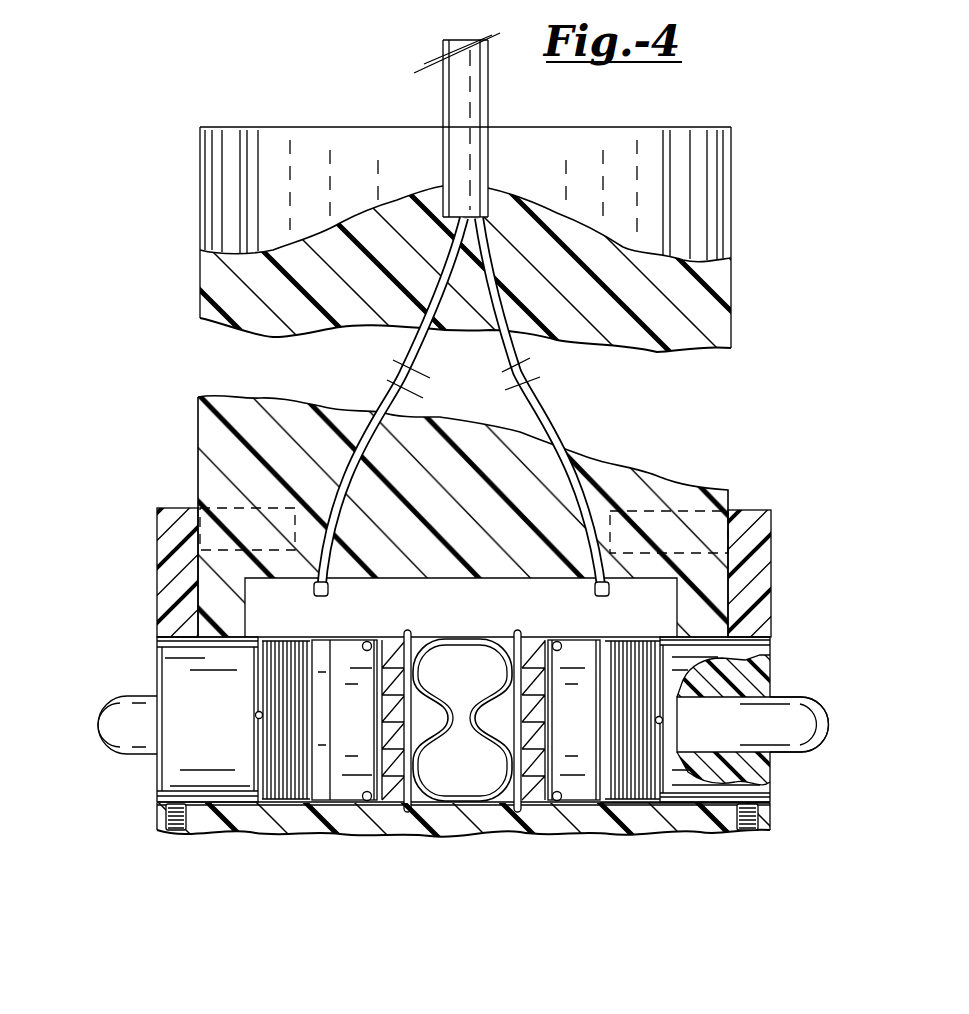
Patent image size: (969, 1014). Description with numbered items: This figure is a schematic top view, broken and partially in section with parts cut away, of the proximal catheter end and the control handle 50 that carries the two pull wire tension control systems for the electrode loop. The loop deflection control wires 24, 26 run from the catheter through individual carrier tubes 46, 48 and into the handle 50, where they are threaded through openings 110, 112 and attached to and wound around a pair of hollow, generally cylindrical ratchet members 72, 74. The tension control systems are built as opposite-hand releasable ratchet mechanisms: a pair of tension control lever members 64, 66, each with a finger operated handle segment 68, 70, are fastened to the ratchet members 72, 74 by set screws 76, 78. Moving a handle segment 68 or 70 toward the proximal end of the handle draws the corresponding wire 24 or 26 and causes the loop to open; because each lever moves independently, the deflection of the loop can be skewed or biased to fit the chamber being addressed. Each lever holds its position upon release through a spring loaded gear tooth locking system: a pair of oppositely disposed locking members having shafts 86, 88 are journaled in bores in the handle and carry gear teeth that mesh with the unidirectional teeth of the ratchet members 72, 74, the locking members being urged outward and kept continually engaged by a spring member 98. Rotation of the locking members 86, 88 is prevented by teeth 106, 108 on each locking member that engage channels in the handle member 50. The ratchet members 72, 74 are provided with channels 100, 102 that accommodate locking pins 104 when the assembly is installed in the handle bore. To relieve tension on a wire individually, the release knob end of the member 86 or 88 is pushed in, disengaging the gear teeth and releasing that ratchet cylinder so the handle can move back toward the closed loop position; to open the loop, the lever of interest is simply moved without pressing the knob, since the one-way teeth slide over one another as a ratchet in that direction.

The deflection control wire 24 is at (309, 608).
The deflection control wire 26 is at (612, 608).
The carrier tube 46 is at (405, 378).
The carrier tube 48 is at (553, 418).
The handle 50 is at (750, 283).
The tension control lever member 64 is at (143, 594).
The tension control lever member 66 is at (784, 551).
The finger operated handle segment 68 is at (222, 508).
The finger operated handle segment 70 is at (656, 511).
The ratchet member 72 is at (228, 805).
The ratchet member 74 is at (692, 806).
The set screw 76 is at (172, 832).
The set screw 78 is at (746, 832).
The locking member shaft 86 is at (110, 747).
The locking member shaft 88 is at (830, 697).
The spring member 98 is at (507, 765).
The channel 100 is at (335, 637).
The channel 102 is at (587, 640).
The locking pin 104 is at (367, 641).
The tooth 106 is at (408, 631).
The tooth 108 is at (517, 631).
The opening 110 is at (258, 713).
The opening 112 is at (662, 720).